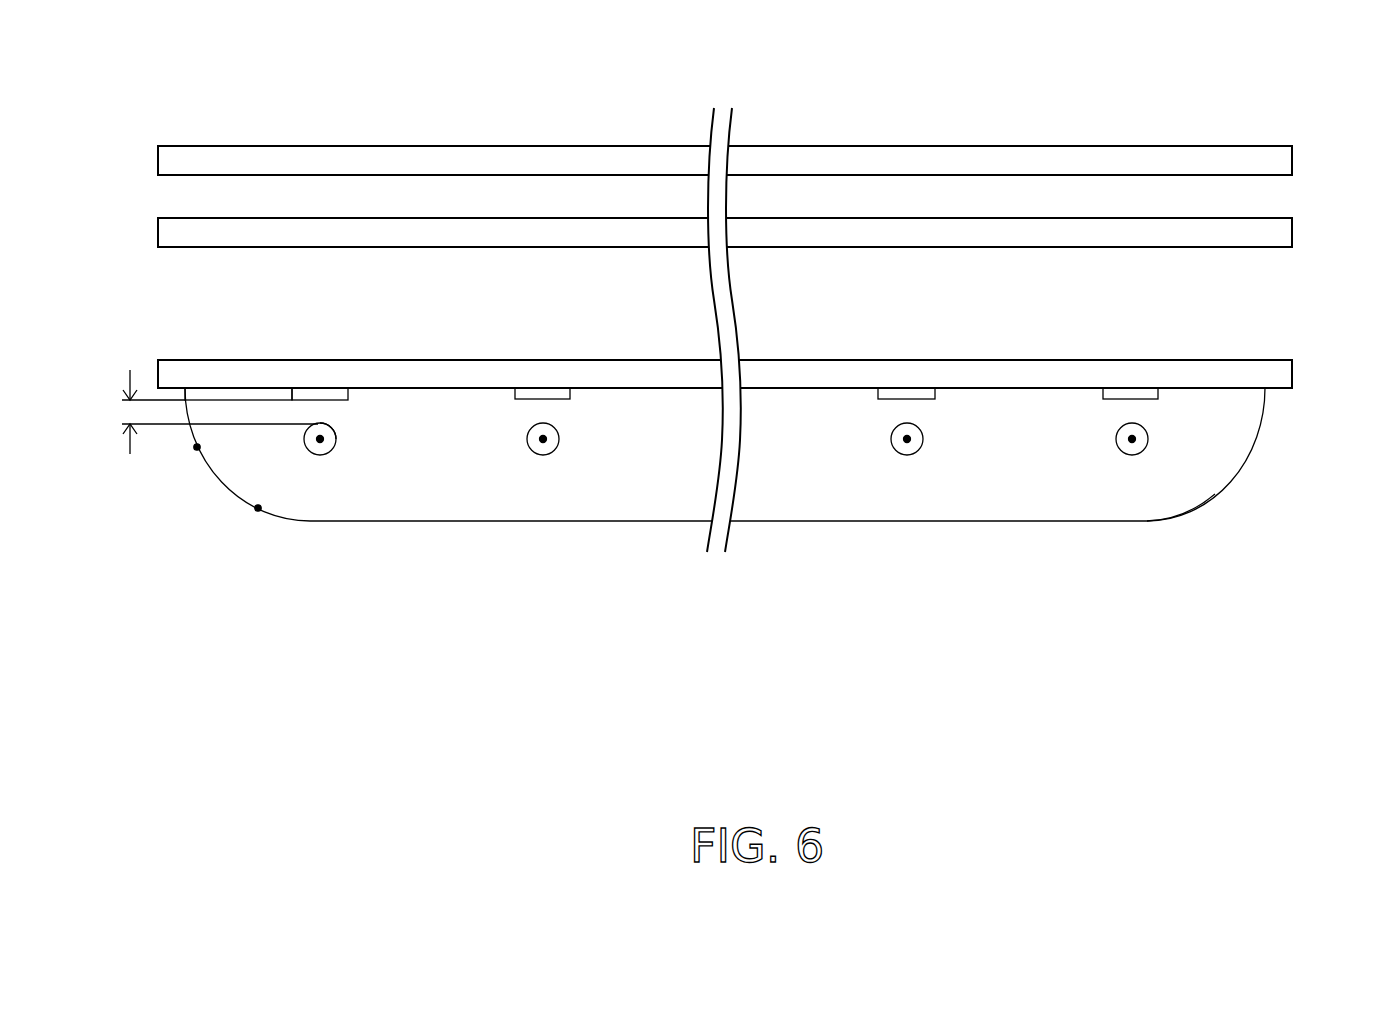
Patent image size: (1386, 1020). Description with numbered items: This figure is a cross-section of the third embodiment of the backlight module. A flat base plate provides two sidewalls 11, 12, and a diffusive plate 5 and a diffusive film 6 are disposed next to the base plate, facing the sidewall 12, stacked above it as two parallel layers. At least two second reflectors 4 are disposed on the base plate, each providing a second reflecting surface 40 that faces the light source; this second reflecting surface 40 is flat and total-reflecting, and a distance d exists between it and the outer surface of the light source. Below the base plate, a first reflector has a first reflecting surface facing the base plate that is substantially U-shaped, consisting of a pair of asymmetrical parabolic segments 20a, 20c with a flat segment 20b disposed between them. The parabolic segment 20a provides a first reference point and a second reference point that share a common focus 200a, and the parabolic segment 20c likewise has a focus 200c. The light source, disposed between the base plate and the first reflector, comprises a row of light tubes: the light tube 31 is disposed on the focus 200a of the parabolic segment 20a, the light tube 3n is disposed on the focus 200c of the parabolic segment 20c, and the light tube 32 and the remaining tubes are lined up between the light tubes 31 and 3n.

The diffusive film 6 is at (1296, 158).
The diffusive plate 5 is at (1296, 230).
The sidewall 12 is at (1248, 360).
The sidewall 11 is at (1158, 398).
The second reflecting surface 40 is at (1222, 388).
The second reflector 4 is at (318, 390).
The parabolic segment 20a is at (228, 484).
The flat segment 20b is at (773, 521).
The parabolic segment 20c is at (1225, 478).
The focus 200a is at (331, 449).
The focus 200c is at (1217, 524).
The distance d is at (207, 412).
The light tube 31 is at (320, 457).
The light tube 32 is at (543, 457).
The light tube 3n is at (1132, 456).